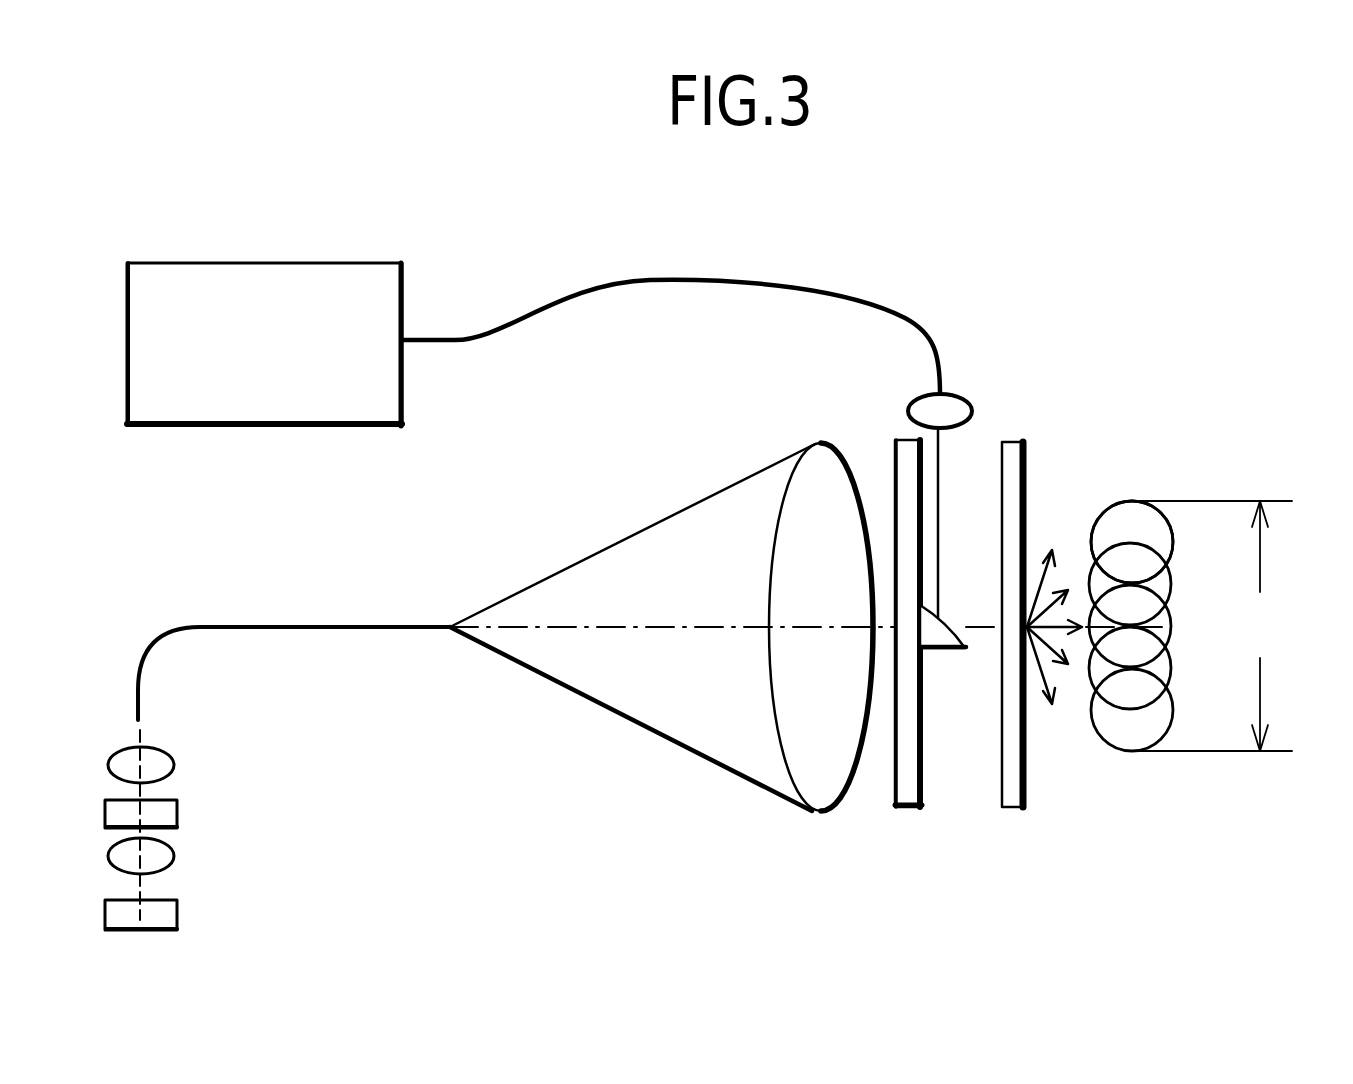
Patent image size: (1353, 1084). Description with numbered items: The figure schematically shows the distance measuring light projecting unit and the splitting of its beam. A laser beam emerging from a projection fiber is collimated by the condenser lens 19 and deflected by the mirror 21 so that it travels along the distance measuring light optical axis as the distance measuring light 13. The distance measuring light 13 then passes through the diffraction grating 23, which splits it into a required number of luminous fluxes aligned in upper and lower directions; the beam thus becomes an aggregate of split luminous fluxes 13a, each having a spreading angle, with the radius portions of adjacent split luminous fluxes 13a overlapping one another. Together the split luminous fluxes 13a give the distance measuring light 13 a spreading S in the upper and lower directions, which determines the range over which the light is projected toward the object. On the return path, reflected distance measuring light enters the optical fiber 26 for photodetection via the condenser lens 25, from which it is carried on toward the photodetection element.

The distance measuring light 13 is at (1148, 779).
The split luminous fluxes 13a is at (1130, 499).
The condenser lens 19 is at (978, 400).
The mirror 21 is at (945, 650).
The diffraction grating 23 is at (1028, 461).
The condenser lens 25 is at (815, 445).
The optical fiber for photodetection 26 is at (308, 620).